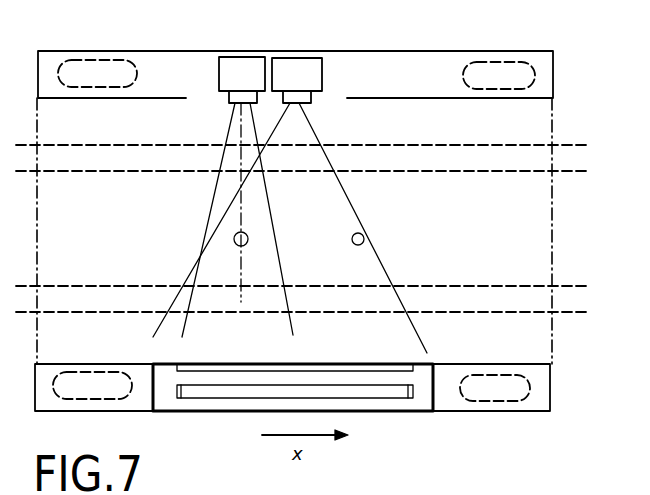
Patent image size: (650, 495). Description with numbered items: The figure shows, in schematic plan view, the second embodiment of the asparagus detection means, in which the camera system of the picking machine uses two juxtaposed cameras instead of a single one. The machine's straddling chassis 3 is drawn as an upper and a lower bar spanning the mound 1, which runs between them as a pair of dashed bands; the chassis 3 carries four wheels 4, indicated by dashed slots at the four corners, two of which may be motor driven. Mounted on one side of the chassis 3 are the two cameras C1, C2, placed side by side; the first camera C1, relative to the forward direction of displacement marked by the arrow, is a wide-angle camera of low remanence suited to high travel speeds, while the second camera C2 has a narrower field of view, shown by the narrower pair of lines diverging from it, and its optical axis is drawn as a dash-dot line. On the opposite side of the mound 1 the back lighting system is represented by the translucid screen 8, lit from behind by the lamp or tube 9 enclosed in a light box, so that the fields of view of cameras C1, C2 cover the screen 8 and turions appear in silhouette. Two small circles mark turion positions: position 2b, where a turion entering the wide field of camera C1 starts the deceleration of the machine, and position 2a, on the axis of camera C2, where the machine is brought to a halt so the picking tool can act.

The mound 1 is at (440, 165).
The turion position on axis of camera C2 2a is at (248, 240).
The turion position entering field of view of camera C1 2b is at (364, 239).
The straddling chassis 3 is at (170, 50).
The wheels 4 is at (80, 60).
The translucid screen 8 is at (383, 371).
The lamp or tube 9 is at (217, 386).
The first camera C1 is at (318, 83).
The second camera C2 is at (232, 78).